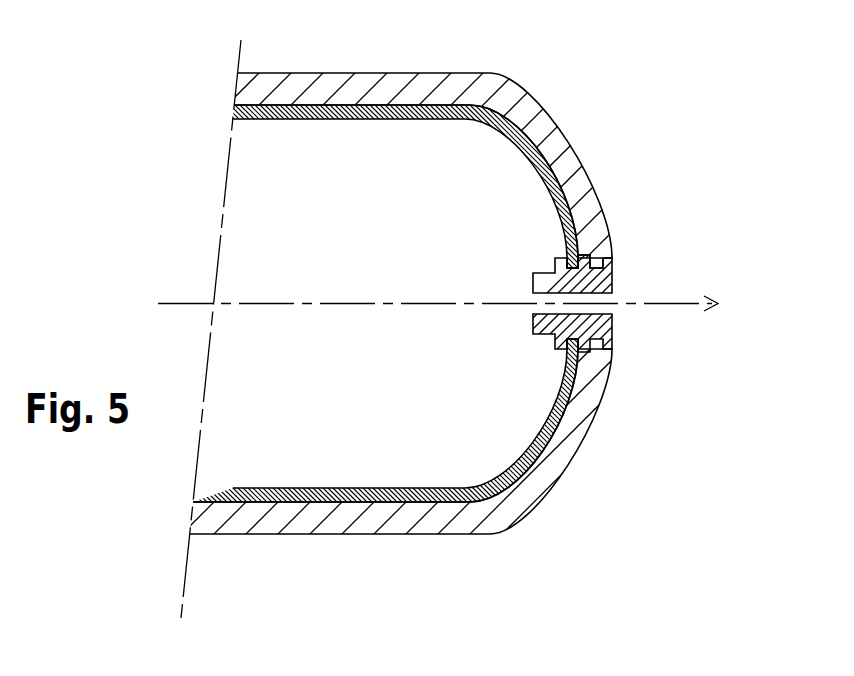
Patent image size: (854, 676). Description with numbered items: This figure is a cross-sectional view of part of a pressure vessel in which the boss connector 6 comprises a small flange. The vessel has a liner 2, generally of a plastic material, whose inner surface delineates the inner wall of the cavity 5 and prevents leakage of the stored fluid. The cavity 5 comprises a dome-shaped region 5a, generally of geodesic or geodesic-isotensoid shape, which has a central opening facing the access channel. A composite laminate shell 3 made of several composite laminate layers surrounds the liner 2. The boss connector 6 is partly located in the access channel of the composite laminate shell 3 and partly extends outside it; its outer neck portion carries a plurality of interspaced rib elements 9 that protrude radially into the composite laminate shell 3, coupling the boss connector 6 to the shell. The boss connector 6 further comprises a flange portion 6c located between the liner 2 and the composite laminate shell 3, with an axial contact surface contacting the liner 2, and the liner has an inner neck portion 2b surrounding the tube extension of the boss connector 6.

The cavity 5 is at (258, 195).
The composite laminate shell 3 is at (260, 93).
The liner 2 is at (238, 109).
The inner neck portion 2b is at (548, 340).
The dome-shaped region 5a is at (449, 362).
The boss connector 6 is at (609, 285).
The flange portion 6c is at (576, 259).
The interspaced rib elements 9 is at (584, 259).